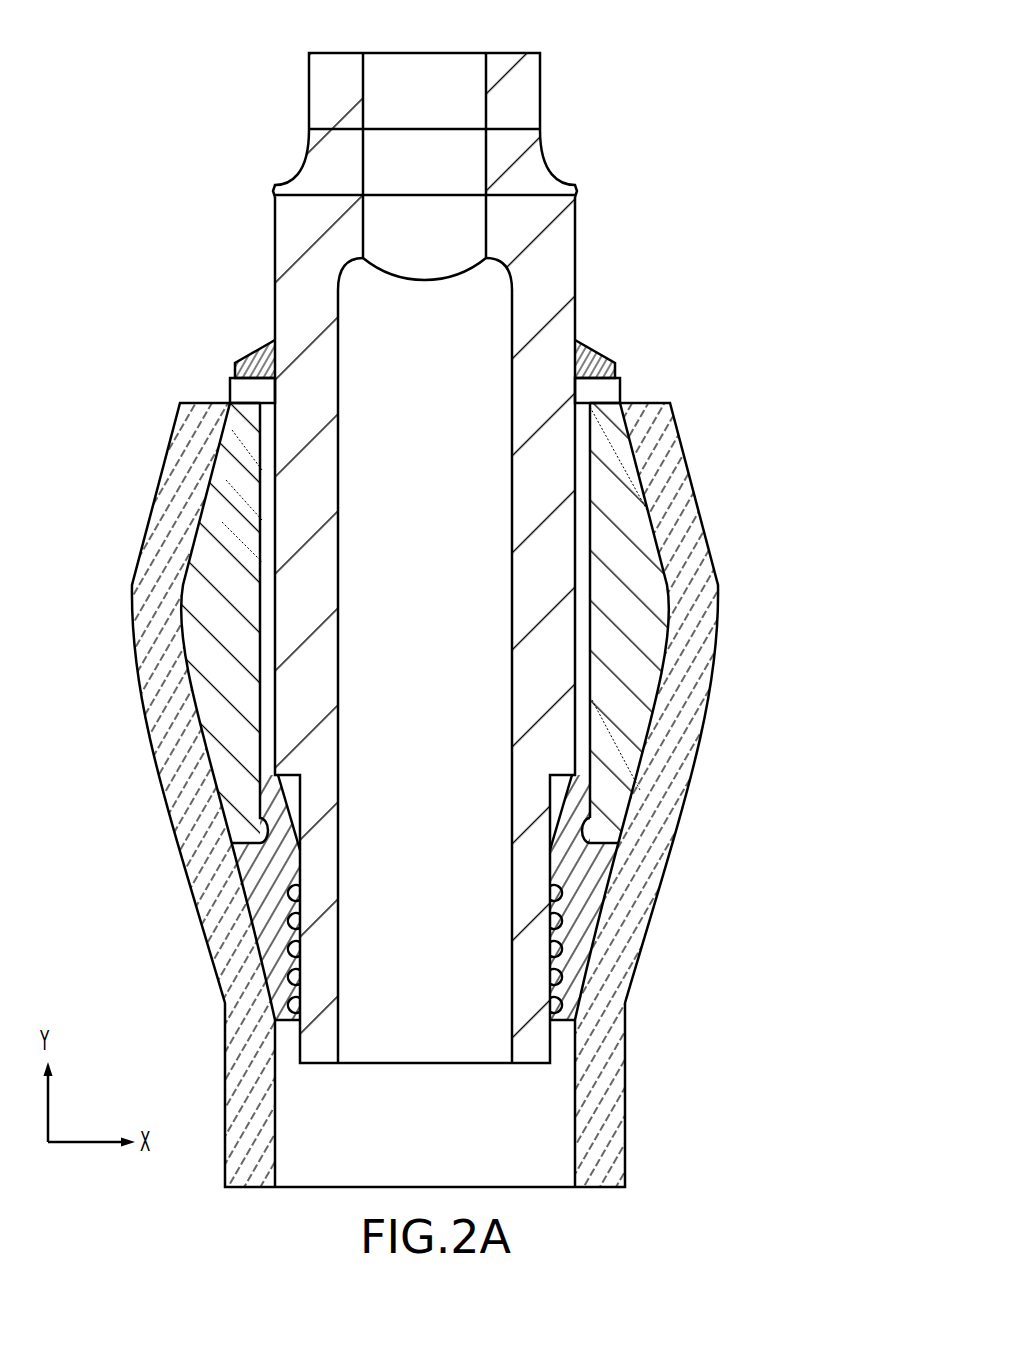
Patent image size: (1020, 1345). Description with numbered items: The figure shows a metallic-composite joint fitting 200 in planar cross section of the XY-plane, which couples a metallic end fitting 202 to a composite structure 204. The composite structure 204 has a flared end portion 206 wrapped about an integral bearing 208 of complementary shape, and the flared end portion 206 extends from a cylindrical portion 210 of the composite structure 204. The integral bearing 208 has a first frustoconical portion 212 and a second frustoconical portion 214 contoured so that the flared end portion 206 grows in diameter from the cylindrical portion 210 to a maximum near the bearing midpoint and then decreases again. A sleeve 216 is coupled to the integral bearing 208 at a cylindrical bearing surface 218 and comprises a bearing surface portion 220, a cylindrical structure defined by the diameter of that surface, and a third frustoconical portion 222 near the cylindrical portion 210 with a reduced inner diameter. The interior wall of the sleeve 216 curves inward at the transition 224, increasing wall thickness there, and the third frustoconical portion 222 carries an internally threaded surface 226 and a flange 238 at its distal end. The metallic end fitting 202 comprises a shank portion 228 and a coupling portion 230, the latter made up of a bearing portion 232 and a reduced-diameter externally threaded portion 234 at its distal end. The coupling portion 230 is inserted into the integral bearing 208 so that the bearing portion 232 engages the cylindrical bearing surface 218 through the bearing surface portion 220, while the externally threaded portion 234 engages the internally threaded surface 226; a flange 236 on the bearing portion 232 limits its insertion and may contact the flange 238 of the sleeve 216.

The metallic-composite joint fitting 200 is at (781, 50).
The metallic end fitting 202 is at (585, 51).
The composite structure 204 is at (781, 743).
The flared end portion 206 is at (781, 585).
The integral bearing 208 is at (636, 641).
The cylindrical portion 210 is at (613, 1065).
The first frustoconical portion 212 is at (625, 768).
The second frustoconical portion 214 is at (627, 490).
The sleeve 216 is at (270, 448).
The cylindrical bearing surface 218 is at (258, 493).
The bearing surface portion 220 is at (270, 522).
The third frustoconical portion 222 is at (260, 866).
The transition 224 is at (283, 797).
The internally threaded surface 226 is at (275, 932).
The shank portion 228 is at (527, 110).
The coupling portion 230 is at (615, 206).
The bearing portion 232 is at (577, 398).
The externally threaded portion 234 is at (530, 902).
The flange 236 is at (590, 357).
The flange 238 is at (240, 392).